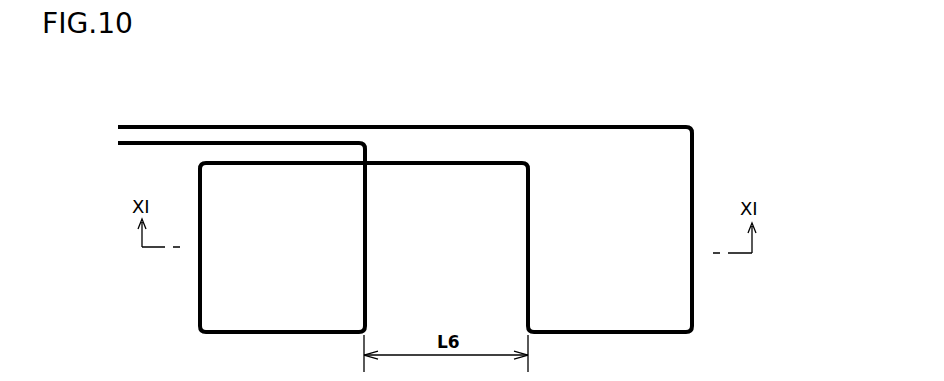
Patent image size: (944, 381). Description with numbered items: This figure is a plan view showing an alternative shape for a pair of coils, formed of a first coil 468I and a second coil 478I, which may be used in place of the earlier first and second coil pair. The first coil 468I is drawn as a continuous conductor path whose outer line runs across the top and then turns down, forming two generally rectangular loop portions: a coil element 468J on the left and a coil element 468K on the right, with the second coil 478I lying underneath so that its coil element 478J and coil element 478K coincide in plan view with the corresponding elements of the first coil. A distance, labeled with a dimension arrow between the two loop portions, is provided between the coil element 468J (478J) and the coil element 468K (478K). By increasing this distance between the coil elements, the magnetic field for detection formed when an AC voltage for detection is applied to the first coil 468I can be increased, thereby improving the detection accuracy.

The first coil 468I is at (405, 119).
The second coil 478I is at (284, 86).
The coil element 468J is at (211, 240).
The coil element 478J is at (200, 296).
The coil element 468K is at (681, 232).
The coil element 478K is at (692, 295).